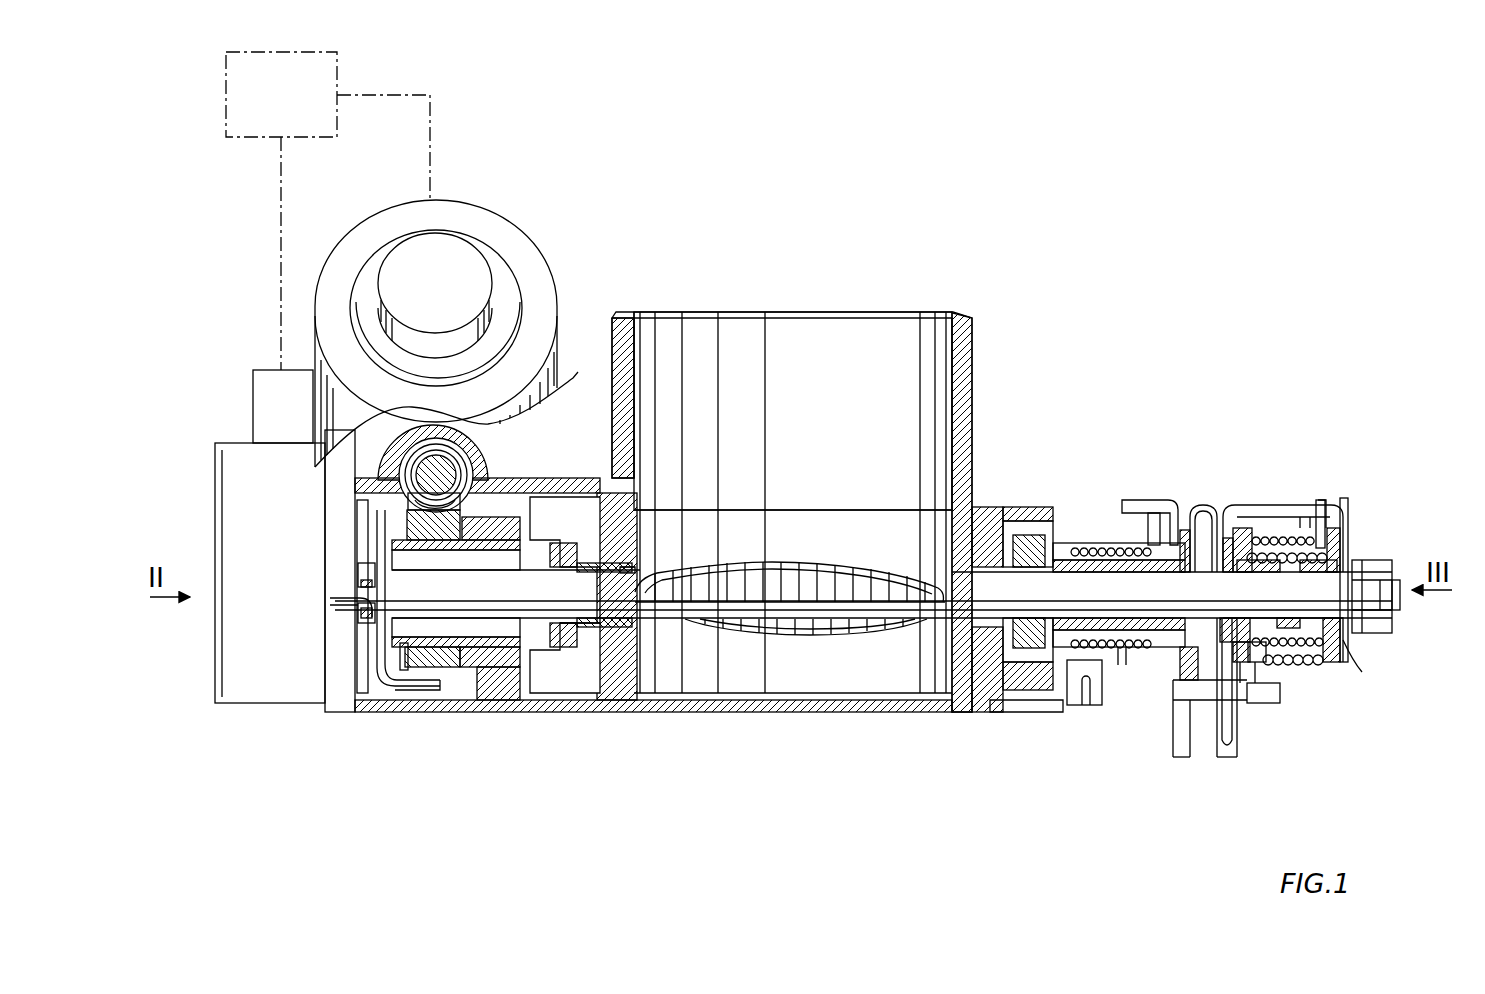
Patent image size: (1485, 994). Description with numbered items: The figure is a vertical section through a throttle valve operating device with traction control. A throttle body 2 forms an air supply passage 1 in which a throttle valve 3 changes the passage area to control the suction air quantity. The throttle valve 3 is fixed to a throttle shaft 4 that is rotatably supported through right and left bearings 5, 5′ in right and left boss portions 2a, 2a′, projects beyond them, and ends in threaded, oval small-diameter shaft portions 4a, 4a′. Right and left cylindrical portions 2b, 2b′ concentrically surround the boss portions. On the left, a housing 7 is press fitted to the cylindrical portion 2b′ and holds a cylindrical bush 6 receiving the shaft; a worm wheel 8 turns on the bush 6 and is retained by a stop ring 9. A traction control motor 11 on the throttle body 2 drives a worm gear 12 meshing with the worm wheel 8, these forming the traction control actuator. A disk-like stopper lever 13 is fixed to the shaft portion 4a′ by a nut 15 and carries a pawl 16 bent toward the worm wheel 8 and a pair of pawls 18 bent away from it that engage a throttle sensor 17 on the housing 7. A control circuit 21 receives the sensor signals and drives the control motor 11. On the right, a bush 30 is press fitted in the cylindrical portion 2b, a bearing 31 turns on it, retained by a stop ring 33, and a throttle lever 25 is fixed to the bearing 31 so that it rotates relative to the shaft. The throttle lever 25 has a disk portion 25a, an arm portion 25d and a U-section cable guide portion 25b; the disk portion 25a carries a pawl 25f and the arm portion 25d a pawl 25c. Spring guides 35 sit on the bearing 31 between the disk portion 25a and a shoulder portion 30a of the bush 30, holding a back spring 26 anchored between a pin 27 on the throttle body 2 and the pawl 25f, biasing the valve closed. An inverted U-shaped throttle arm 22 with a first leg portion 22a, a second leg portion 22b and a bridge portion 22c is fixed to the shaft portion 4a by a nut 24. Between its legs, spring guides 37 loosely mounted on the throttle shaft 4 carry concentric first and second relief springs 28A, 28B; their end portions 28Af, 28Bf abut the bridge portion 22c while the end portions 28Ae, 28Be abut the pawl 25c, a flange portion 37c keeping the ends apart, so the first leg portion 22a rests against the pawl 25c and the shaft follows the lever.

The air supply passage 1 is at (849, 330).
The throttle body 2 is at (968, 329).
The right boss portion 2a is at (1016, 662).
The left boss portion 2a′ is at (560, 645).
The right cylindrical portion 2b is at (1018, 527).
The left cylindrical portion 2b′ is at (549, 484).
The throttle valve 3 is at (781, 565).
The throttle shaft 4 is at (800, 612).
The right small-diameter shaft portion 4a is at (1396, 612).
The left small-diameter shaft portion 4a′ is at (358, 587).
The right bearing 5 is at (980, 548).
The left bearing 5′ is at (590, 560).
The bush 6 is at (478, 650).
The housing 7 is at (490, 690).
The worm wheel 8 is at (450, 668).
The stop ring 9 is at (396, 656).
The traction control motor 11 is at (510, 224).
The worm gear 12 is at (430, 480).
The stopper lever 13 is at (383, 654).
The nut 15 is at (357, 618).
The pawl 16 is at (418, 690).
The throttle sensor 17 is at (214, 518).
The pawls 18 is at (332, 601).
The control circuit 21 is at (263, 117).
The throttle arm 22 is at (1292, 503).
The first leg portion 22a is at (1228, 742).
The second leg portion 22b is at (1348, 645).
The bridge portion 22c is at (1246, 513).
The nut 24 is at (1372, 563).
The throttle lever 25 is at (1170, 738).
The disk portion 25a is at (1176, 682).
The cable guide portion 25b is at (1220, 752).
The pawl 25c is at (1274, 692).
The arm portion 25d is at (1180, 757).
The pawl 25f is at (1150, 508).
The back spring 26 is at (1123, 662).
The pin 27 is at (1040, 706).
The first relief spring 28A is at (1280, 540).
The end portion of first relief spring 28Ae is at (1238, 708).
The end portion of first relief spring 28Af is at (1330, 505).
The second relief spring 28B is at (1321, 535).
The end portion of second relief spring 28Be is at (1262, 670).
The end portion of second relief spring 28Bf is at (1305, 545).
The bush 30 is at (1046, 540).
The shoulder portion 30a is at (1070, 668).
The bearing 31 is at (1093, 553).
The stop ring 33 is at (1192, 540).
The spring guides 35 is at (1076, 548).
The spring guides 37 is at (1216, 522).
The flange portion 37c is at (1338, 520).